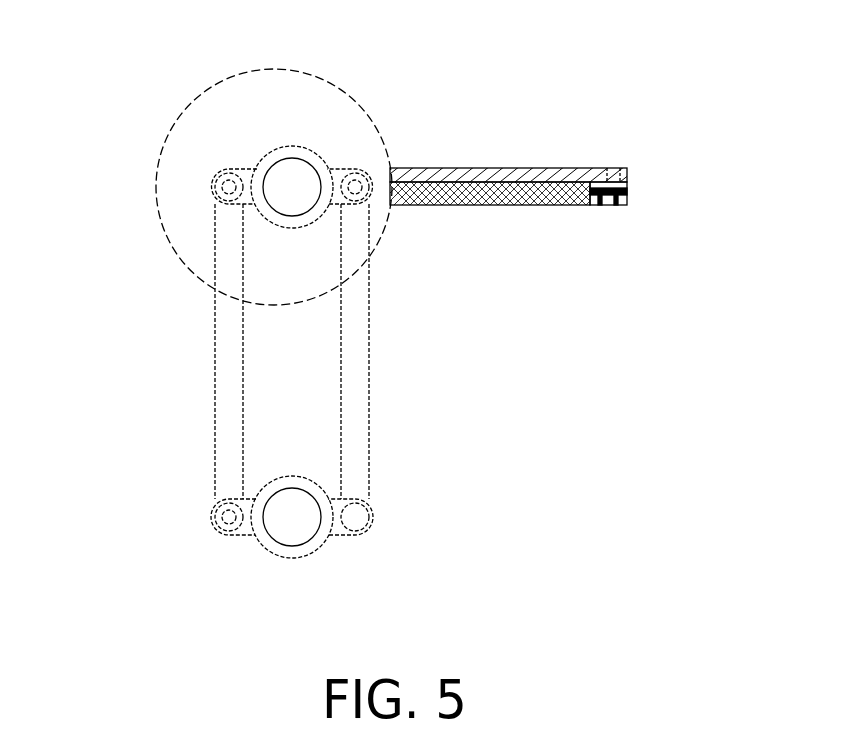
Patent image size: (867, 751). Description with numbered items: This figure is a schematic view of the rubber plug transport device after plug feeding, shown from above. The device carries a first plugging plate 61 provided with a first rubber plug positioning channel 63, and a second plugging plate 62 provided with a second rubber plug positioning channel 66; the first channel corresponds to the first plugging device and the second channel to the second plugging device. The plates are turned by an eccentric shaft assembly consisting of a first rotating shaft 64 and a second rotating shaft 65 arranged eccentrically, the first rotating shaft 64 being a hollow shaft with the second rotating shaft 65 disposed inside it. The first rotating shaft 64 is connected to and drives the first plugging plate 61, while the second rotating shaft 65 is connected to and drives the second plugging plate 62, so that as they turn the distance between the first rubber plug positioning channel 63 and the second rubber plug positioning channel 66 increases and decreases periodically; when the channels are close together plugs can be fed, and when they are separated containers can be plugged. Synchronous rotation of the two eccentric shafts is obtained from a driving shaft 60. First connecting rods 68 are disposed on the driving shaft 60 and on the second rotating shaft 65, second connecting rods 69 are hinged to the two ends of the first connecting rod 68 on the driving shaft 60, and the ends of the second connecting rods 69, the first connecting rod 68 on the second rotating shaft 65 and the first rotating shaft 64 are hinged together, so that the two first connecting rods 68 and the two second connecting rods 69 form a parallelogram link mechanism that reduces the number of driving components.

The driving shaft 60 is at (292, 536).
The first plugging plate 61 is at (468, 177).
The second plugging plate 62 is at (522, 205).
The first rubber plug positioning channel 63 is at (618, 170).
The first rotating shaft 64 is at (337, 145).
The second rotating shaft 65 is at (285, 193).
The second rubber plug positioning channel 66 is at (592, 180).
The first connecting rods 68 is at (332, 177).
The second connecting rods 69 is at (227, 382).